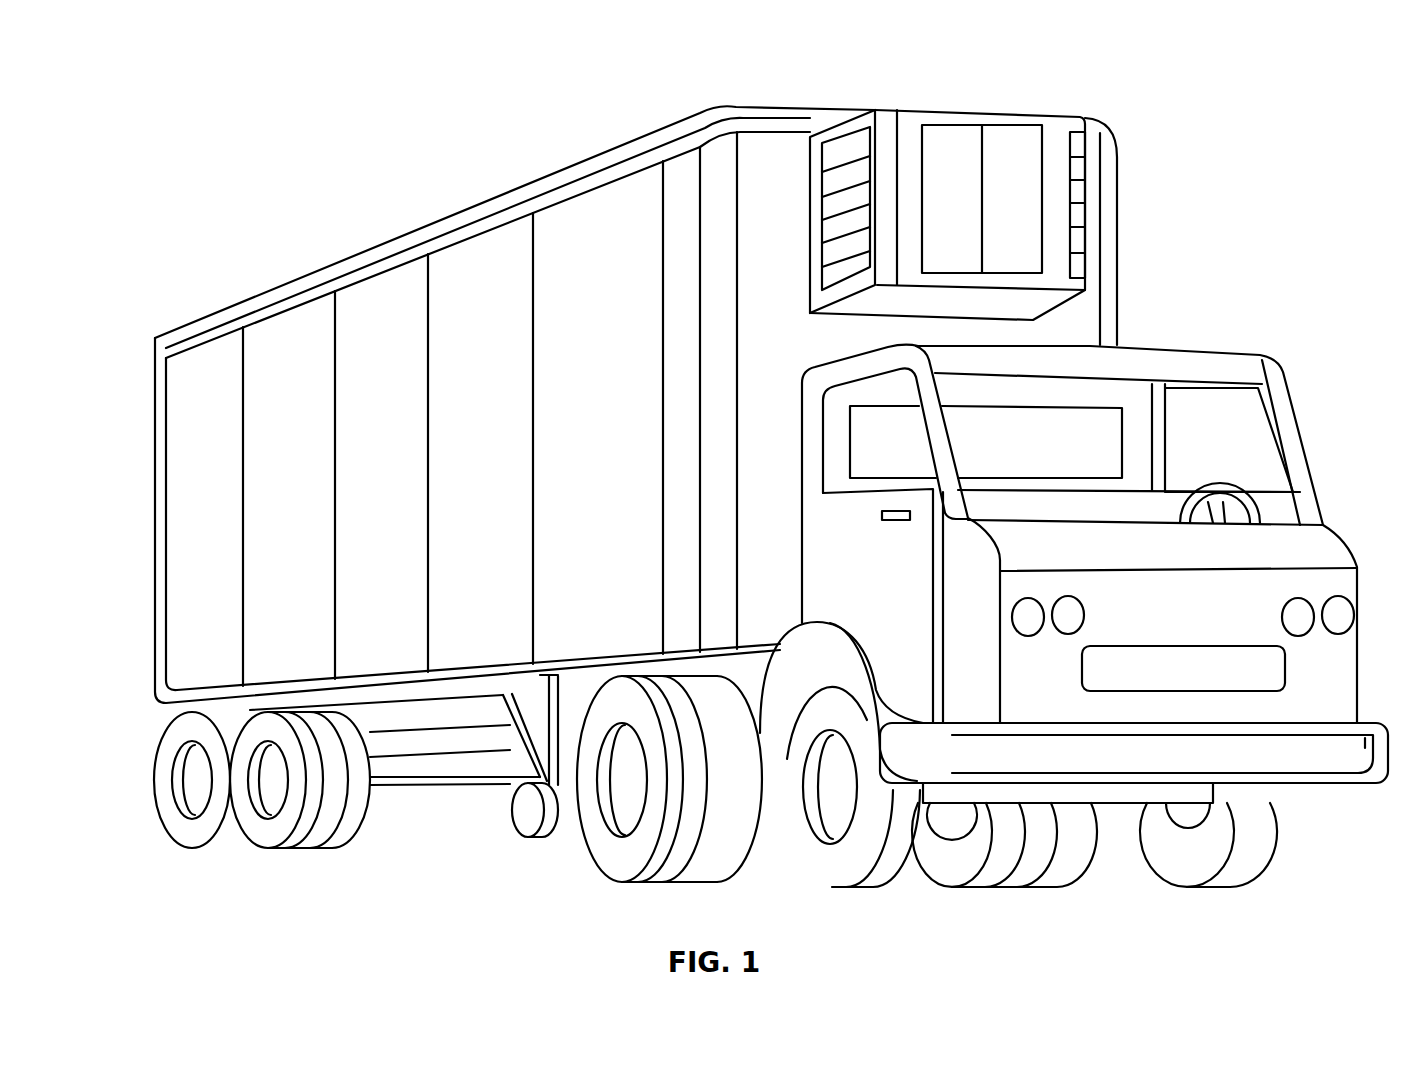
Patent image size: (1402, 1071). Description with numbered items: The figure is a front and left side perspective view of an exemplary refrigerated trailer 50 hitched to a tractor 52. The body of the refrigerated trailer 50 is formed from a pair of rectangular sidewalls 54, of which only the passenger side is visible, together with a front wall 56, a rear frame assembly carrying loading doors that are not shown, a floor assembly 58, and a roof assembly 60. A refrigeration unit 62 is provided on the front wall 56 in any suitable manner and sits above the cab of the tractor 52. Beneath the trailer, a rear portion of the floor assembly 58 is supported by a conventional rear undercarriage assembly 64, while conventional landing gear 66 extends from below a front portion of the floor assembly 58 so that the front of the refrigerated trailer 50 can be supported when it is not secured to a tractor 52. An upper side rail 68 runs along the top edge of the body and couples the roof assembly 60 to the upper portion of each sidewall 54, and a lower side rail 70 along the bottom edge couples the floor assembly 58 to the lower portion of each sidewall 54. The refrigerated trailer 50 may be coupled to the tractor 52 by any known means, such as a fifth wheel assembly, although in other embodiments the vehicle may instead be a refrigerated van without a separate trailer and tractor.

The refrigerated trailer 50 is at (489, 166).
The tractor 52 is at (1333, 552).
The sidewall 54 is at (263, 383).
The front wall 56 is at (770, 140).
The floor assembly 58 is at (408, 693).
The roof assembly 60 is at (374, 249).
The refrigeration unit 62 is at (1015, 140).
The rear undercarriage assembly 64 is at (158, 748).
The landing gear 66 is at (542, 838).
The upper side rail 68 is at (215, 318).
The lower side rail 70 is at (323, 685).